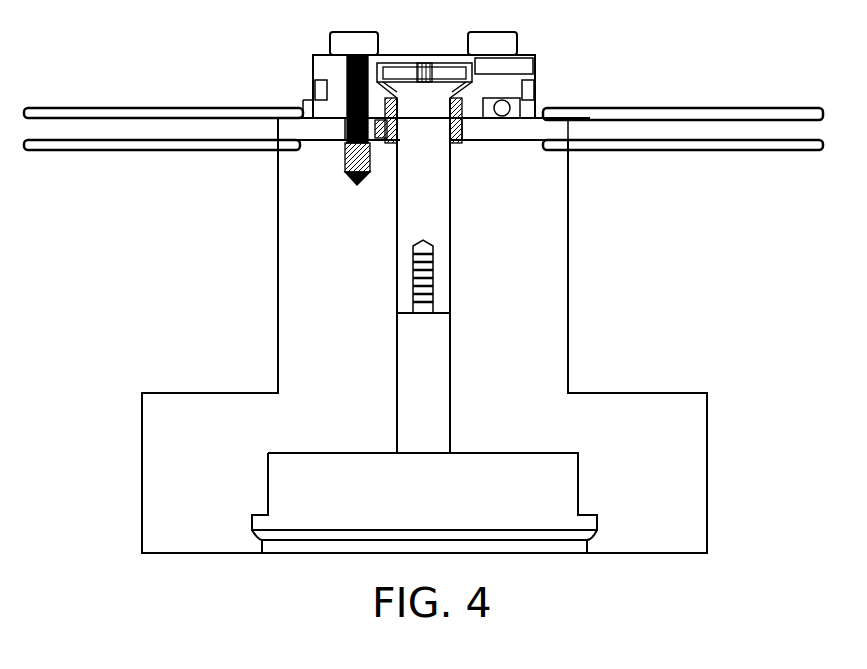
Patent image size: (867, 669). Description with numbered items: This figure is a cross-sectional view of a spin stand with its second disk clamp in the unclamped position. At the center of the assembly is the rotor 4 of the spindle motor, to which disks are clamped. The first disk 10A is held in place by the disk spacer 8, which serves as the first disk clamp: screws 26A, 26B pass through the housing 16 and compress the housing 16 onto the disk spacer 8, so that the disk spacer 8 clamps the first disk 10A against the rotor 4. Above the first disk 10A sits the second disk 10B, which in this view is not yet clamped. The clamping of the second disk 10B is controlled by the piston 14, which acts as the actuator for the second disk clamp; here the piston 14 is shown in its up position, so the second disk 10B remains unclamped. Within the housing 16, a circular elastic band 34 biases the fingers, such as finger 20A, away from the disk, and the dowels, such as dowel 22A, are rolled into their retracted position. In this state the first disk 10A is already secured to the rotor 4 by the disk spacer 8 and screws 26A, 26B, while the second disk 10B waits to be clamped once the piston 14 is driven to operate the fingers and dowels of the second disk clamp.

The rotor 4 is at (560, 232).
The disk spacer 8 is at (570, 127).
The first disk 10A is at (718, 150).
The second disk 10B is at (718, 108).
The piston 14 is at (437, 188).
The housing 16 is at (313, 62).
The finger 20A is at (538, 70).
The dowel 22A is at (504, 108).
The screw 26A is at (517, 41).
The screw 26B is at (330, 41).
The circular elastic band 34 is at (315, 90).